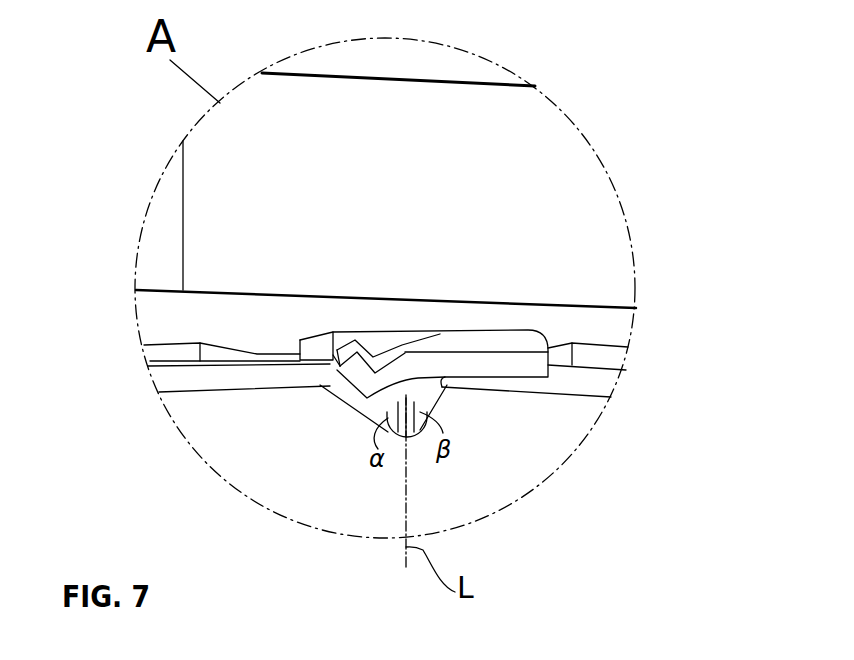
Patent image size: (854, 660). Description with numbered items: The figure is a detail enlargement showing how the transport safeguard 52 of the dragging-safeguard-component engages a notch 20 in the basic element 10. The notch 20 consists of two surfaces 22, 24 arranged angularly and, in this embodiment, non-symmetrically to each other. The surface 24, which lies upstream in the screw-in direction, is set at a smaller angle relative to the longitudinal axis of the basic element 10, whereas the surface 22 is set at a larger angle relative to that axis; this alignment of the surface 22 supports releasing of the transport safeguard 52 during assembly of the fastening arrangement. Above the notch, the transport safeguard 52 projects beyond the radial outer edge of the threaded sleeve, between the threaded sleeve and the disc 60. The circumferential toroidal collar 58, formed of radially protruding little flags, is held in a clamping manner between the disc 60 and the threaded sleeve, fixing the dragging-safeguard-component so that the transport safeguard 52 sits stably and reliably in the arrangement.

The basic element 10 is at (245, 445).
The notch 20 is at (413, 447).
The surface 22 is at (347, 413).
The surface 24 is at (428, 405).
The transport safeguard 52 is at (400, 372).
The toroidal collar 58 is at (157, 355).
The disc 60 is at (590, 220).